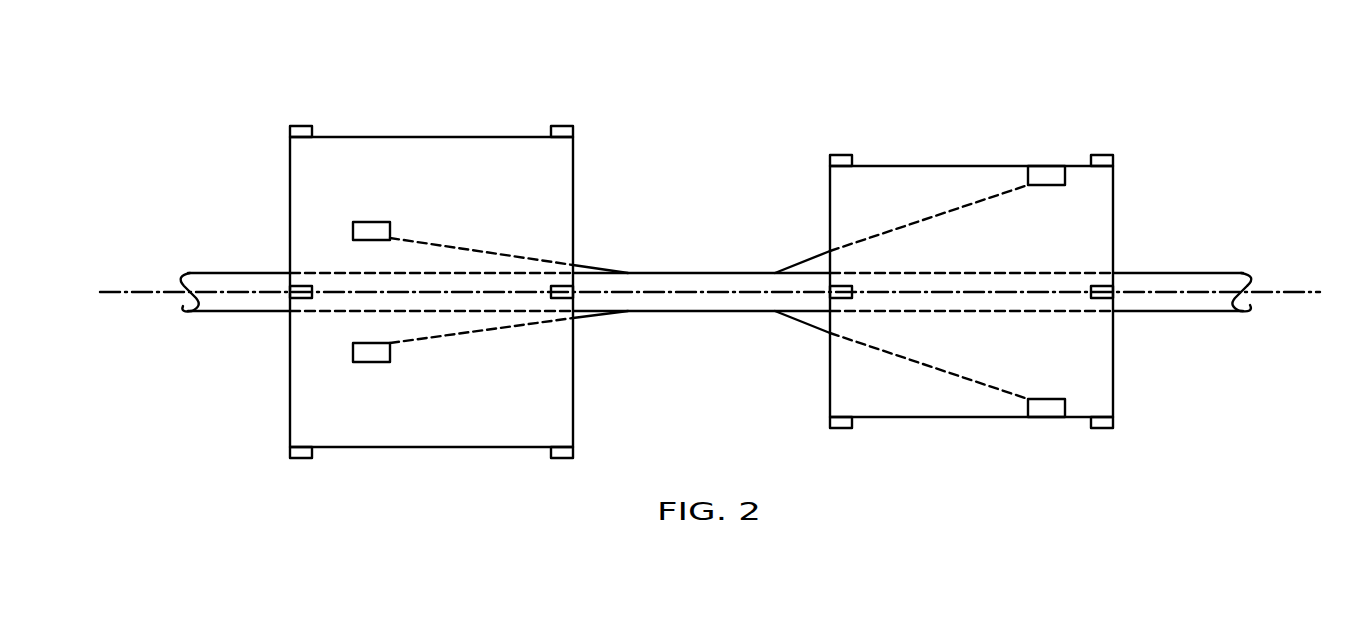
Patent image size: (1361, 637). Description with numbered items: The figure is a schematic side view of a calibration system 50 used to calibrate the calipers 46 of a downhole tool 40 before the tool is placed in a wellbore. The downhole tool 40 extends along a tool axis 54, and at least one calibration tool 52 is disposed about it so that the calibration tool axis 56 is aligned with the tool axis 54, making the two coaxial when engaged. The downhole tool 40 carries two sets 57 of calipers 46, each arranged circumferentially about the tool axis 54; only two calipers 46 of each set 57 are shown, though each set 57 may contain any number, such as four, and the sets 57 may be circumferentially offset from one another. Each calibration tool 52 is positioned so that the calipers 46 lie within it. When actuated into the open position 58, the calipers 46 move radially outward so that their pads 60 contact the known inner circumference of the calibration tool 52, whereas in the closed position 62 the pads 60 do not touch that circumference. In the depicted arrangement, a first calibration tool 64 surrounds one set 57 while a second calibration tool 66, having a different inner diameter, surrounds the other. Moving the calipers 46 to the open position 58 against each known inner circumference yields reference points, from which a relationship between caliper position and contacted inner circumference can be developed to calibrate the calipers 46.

The downhole tool 40 is at (1198, 273).
The calipers 46 is at (585, 318).
The calibration system 50 is at (973, 54).
The calibration tool 52 is at (422, 133).
The tool axis 54 is at (1300, 292).
The calibration tool axis 56 is at (973, 291).
The set of calipers 57 is at (585, 262).
The open position 58 is at (931, 210).
The pads 60 is at (372, 222).
The closed position 62 is at (452, 340).
The first calibration tool 64 is at (681, 285).
The second calibration tool 66 is at (1113, 405).